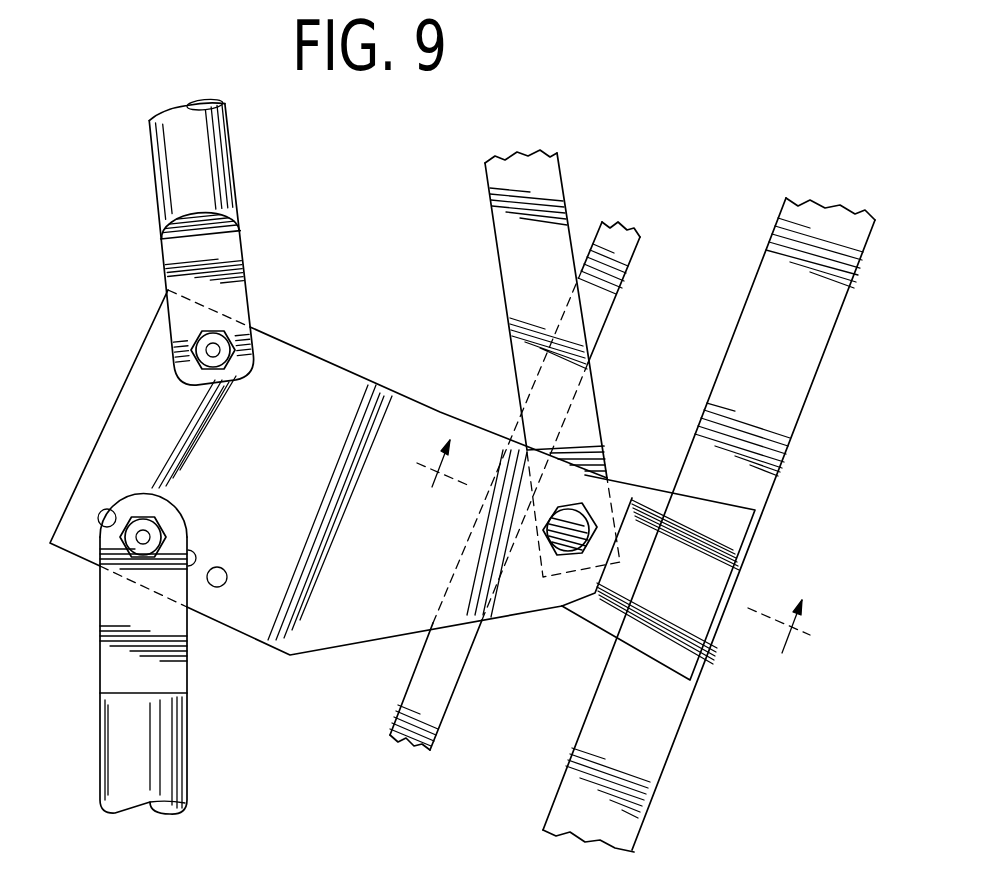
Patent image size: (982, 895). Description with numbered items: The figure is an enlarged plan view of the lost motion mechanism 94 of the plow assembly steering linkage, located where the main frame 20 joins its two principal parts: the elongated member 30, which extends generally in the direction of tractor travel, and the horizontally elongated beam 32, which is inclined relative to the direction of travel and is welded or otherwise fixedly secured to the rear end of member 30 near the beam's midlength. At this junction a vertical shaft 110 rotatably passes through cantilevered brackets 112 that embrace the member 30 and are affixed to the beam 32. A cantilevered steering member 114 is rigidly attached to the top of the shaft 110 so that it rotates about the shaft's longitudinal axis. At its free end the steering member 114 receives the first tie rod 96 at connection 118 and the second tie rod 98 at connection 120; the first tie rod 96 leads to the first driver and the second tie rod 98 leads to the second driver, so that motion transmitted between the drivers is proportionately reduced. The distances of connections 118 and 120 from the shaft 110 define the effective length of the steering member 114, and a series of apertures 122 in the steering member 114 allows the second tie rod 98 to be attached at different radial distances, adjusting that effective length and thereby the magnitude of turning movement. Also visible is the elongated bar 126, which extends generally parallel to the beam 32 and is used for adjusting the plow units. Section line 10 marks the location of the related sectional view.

The section line of FIG. 10 is at (607, 554).
The main frame 20 is at (717, 505).
The elongated member 30 is at (540, 193).
The beam 32 is at (812, 333).
The mechanism 94 is at (335, 471).
The first tie rod 96 is at (207, 178).
The second tie rod 98 is at (160, 755).
The vertical shaft 110 is at (568, 552).
The cantilevered brackets 112 is at (727, 540).
The steering member 114 is at (275, 475).
The connection 118 is at (217, 352).
The connection 120 is at (143, 533).
The apertures 122 is at (98, 547).
The elongated bar 126 is at (597, 317).